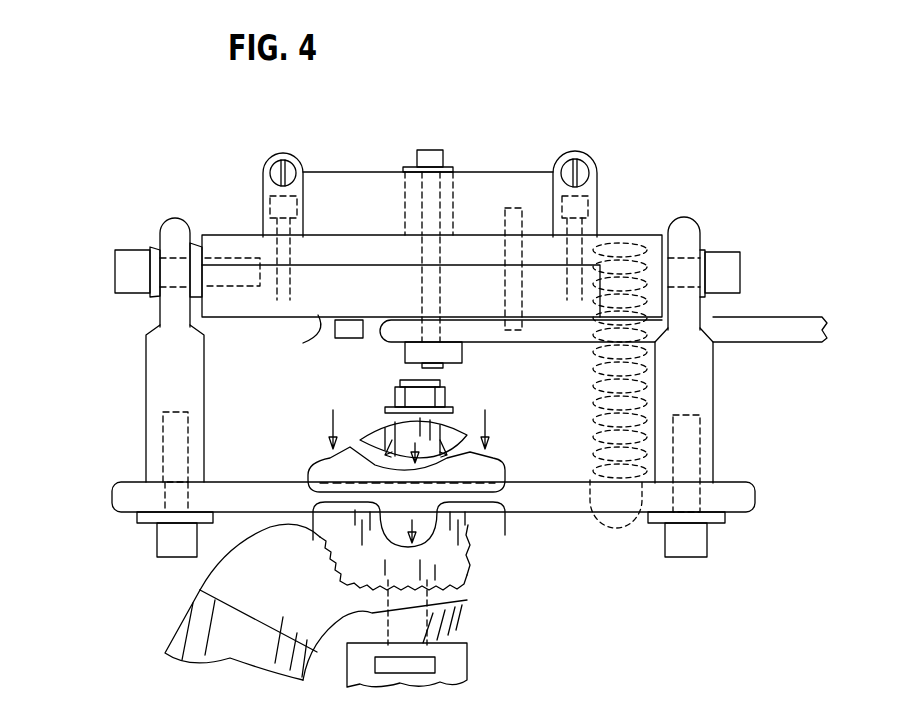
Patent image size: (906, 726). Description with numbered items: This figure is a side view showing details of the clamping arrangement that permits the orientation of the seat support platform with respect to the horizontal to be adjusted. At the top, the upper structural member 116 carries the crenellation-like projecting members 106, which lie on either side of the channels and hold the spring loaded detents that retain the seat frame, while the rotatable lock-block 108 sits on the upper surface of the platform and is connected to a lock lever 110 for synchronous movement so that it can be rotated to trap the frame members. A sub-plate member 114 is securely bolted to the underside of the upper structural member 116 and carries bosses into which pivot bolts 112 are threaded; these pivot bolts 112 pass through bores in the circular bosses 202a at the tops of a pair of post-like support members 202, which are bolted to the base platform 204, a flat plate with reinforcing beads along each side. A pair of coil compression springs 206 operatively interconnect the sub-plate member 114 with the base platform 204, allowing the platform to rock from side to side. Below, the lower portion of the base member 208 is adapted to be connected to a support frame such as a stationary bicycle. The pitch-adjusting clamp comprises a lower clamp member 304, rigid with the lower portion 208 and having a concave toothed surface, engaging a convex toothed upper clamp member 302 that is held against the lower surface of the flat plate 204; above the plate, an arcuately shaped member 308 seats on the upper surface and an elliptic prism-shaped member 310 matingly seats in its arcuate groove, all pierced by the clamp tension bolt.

The crenellation-like projecting members 106 is at (288, 155).
The lock-block 108 is at (405, 163).
The lock lever 110 is at (785, 320).
The pivot bolts 112 is at (115, 273).
The sub-plate member 114 is at (305, 318).
The upper structural member 116 is at (349, 250).
The post-like support members 202 is at (157, 372).
The circular bosses 202a is at (173, 218).
The base platform 204 is at (130, 482).
The coil compression springs 206 is at (657, 393).
The lower portion of the base member 208 is at (200, 590).
The upper clamp member 302 is at (503, 523).
The lower clamp member 304 is at (495, 555).
The arcuately shaped member 308 is at (493, 472).
The elliptic prism-shaped member 310 is at (452, 433).